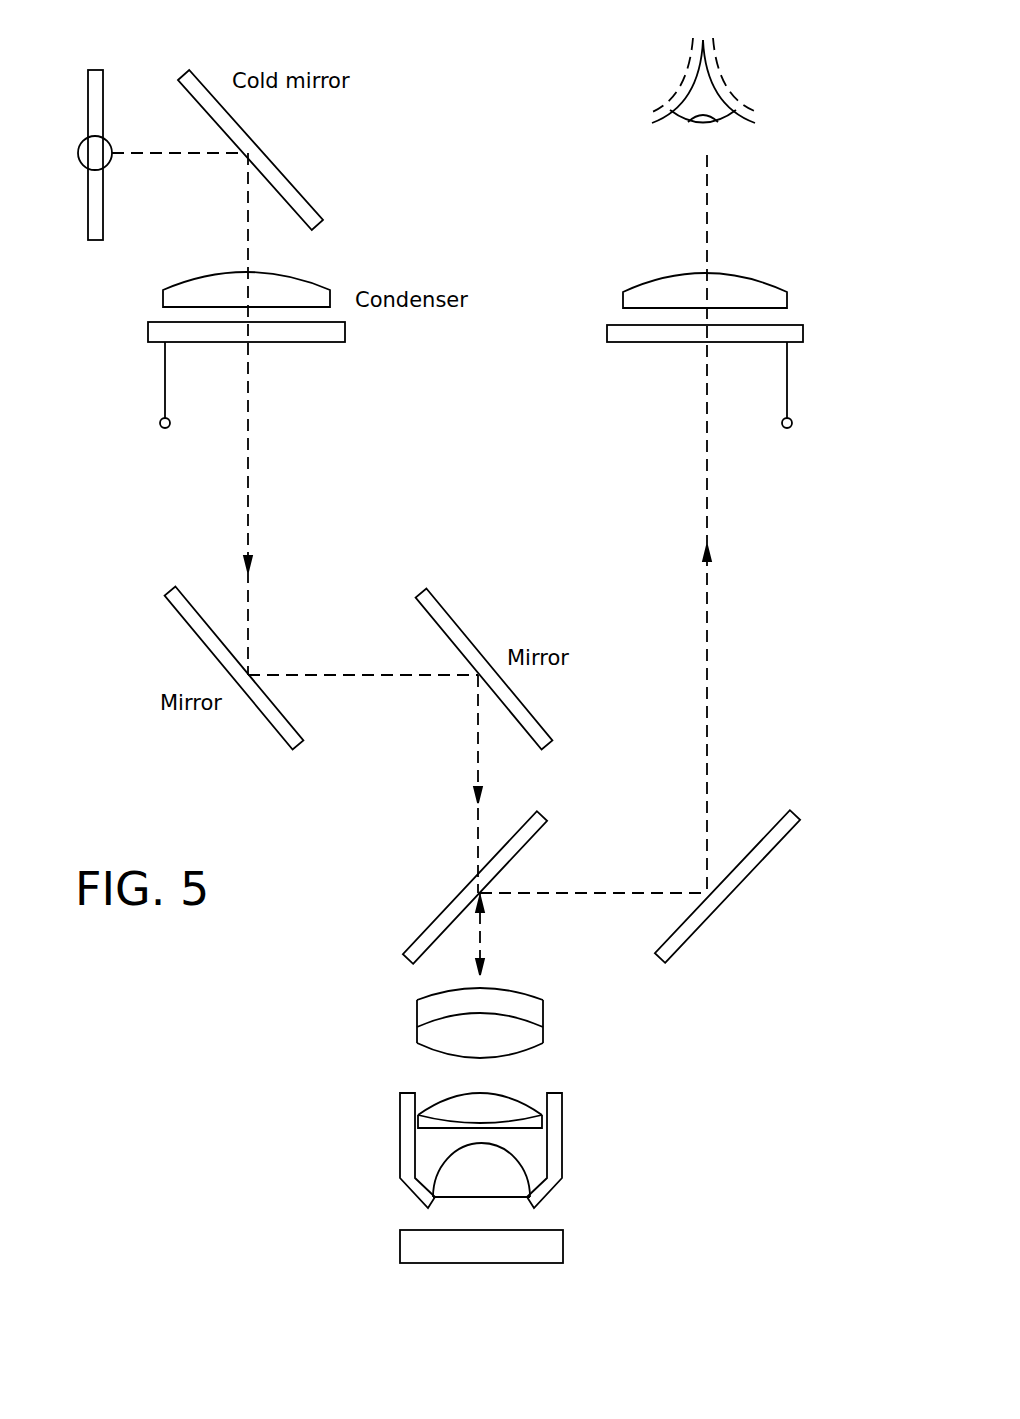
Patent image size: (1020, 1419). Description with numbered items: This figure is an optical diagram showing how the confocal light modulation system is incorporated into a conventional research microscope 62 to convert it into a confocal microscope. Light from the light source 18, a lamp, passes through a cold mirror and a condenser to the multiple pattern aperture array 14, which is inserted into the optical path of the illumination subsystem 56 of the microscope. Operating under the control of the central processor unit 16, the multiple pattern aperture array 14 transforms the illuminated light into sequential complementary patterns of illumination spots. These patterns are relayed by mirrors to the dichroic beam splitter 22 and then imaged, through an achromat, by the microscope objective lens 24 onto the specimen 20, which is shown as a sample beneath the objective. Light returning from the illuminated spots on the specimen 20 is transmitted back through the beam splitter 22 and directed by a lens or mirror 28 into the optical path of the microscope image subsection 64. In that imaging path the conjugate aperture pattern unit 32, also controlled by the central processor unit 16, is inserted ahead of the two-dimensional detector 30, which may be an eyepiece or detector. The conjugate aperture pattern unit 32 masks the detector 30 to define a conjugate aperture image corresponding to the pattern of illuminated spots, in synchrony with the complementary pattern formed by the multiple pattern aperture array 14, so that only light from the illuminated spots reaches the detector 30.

The light source 18 is at (91, 152).
The multiple pattern aperture array 14 is at (347, 332).
The central processor unit 16 is at (478, 432).
The illumination subsystem 56 is at (260, 489).
The dichroic beam splitter 22 is at (530, 845).
The lens or mirror 28 is at (770, 855).
The microscope image subsection 64 is at (721, 592).
The two-dimensional detector 30 is at (762, 68).
The conjugate aperture pattern unit 32 is at (627, 337).
The conventional research microscope 62 is at (675, 1020).
The microscope objective lens 24 is at (498, 1107).
The specimen 20 is at (408, 1242).